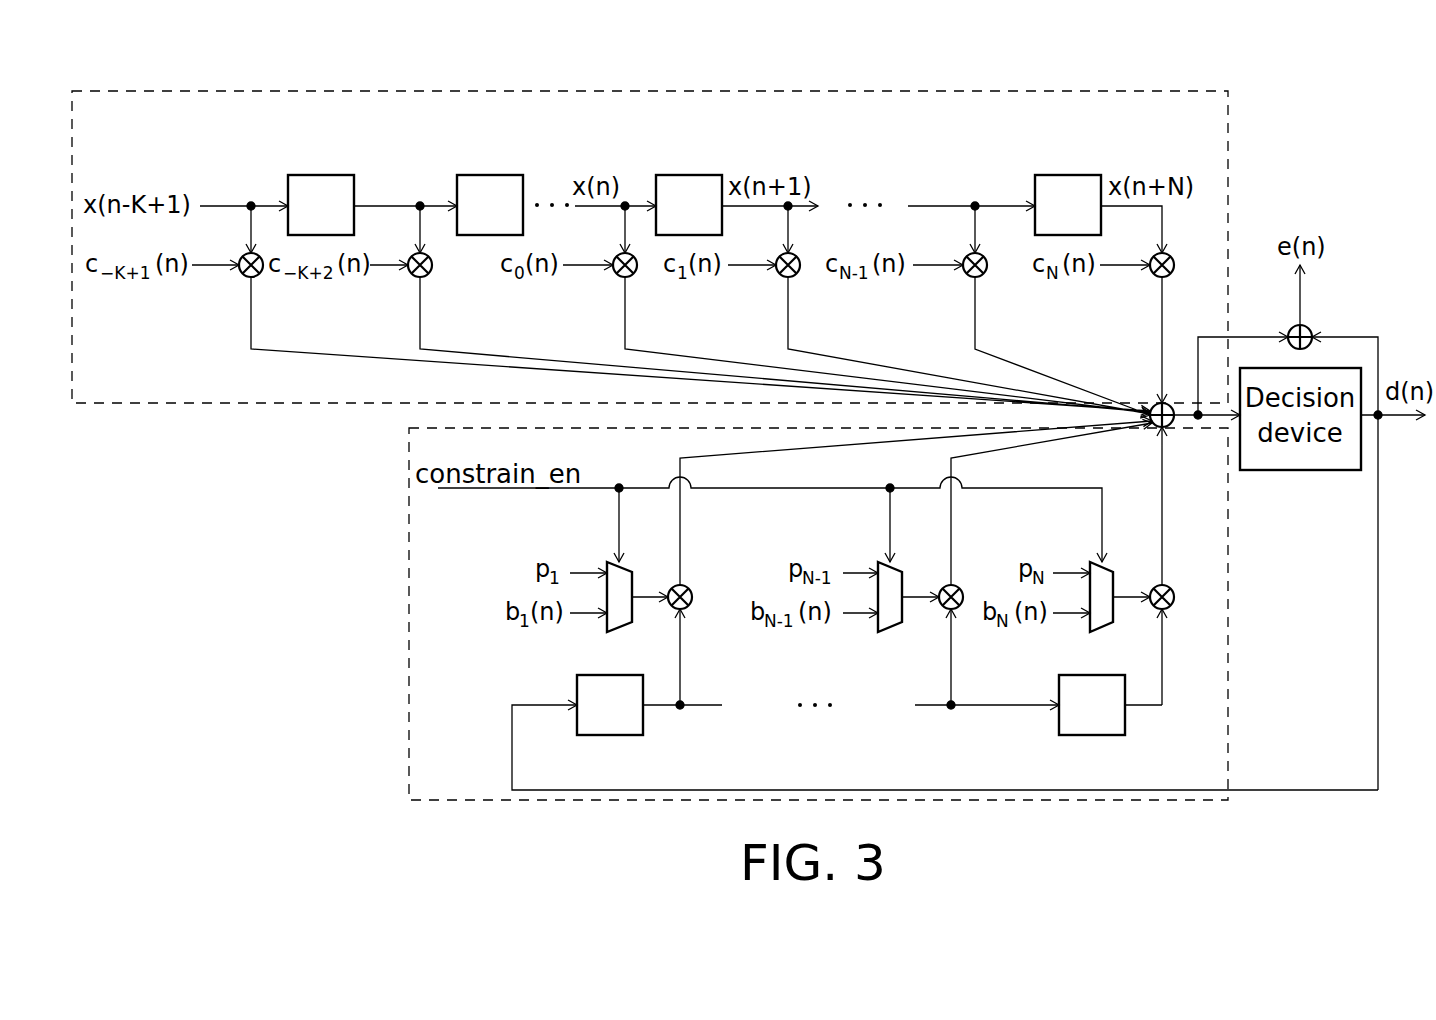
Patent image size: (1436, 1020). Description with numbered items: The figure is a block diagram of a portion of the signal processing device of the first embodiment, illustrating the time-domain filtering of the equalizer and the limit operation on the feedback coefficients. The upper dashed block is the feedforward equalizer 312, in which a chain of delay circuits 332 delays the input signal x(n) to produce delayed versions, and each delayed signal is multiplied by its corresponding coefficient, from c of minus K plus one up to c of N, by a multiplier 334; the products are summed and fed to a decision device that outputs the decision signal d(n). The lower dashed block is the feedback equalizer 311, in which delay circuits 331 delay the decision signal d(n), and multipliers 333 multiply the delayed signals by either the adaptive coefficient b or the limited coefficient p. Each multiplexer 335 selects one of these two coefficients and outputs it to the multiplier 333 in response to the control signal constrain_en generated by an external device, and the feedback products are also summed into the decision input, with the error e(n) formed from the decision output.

The equalizer 311 is at (409, 578).
The equalizer 312 is at (425, 73).
The delay circuit 331 is at (608, 735).
The delay circuit 332 is at (318, 175).
The multiplier 333 is at (690, 607).
The multiplier 334 is at (260, 274).
The multiplexer 335 is at (632, 580).